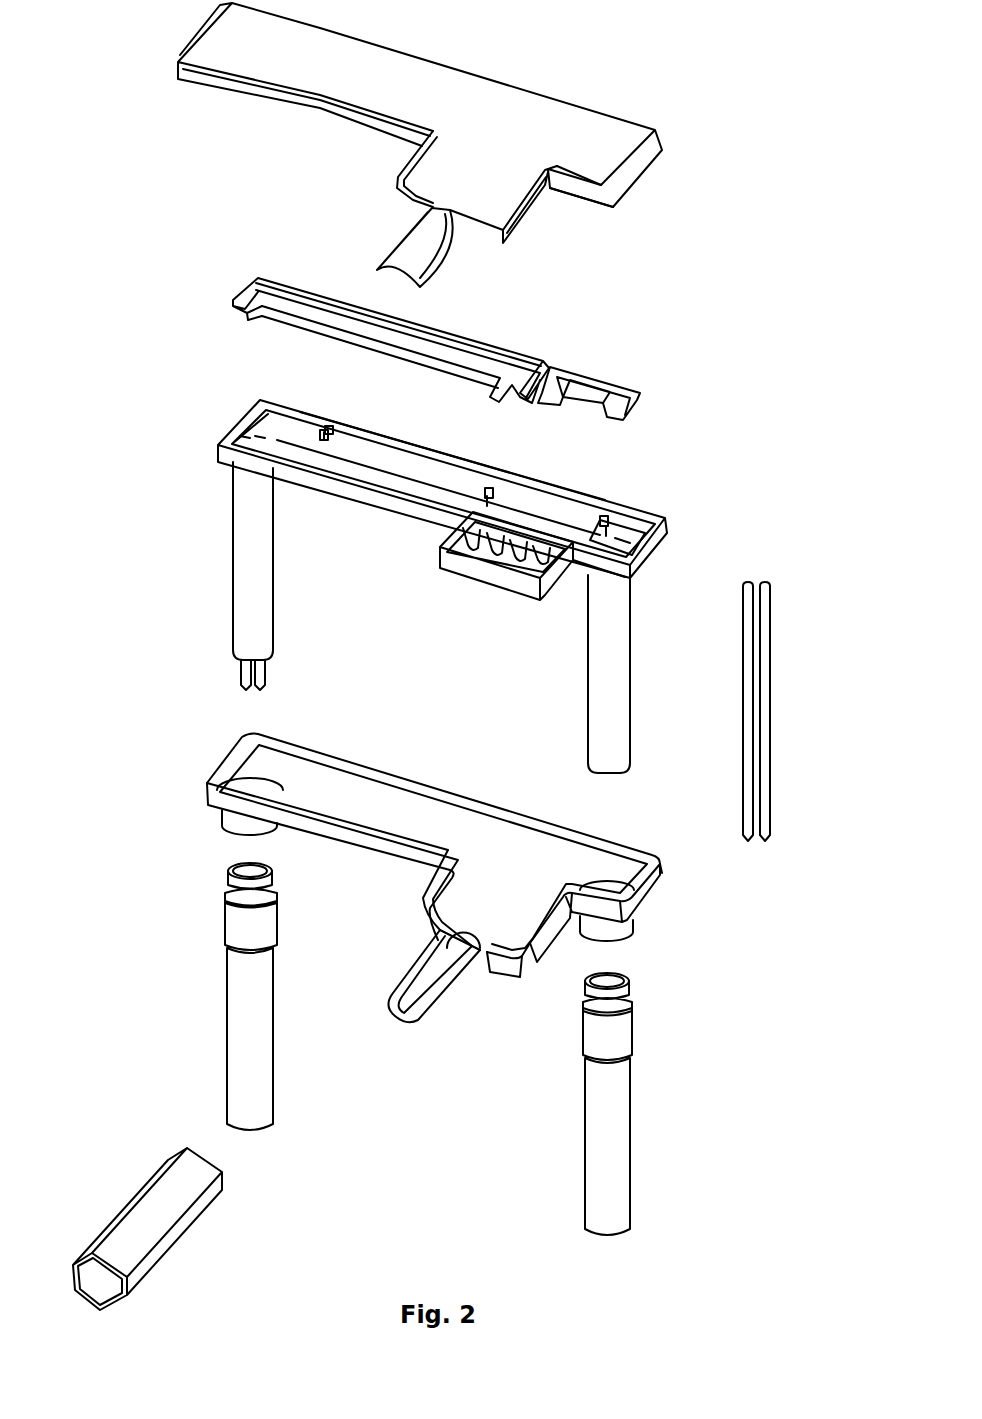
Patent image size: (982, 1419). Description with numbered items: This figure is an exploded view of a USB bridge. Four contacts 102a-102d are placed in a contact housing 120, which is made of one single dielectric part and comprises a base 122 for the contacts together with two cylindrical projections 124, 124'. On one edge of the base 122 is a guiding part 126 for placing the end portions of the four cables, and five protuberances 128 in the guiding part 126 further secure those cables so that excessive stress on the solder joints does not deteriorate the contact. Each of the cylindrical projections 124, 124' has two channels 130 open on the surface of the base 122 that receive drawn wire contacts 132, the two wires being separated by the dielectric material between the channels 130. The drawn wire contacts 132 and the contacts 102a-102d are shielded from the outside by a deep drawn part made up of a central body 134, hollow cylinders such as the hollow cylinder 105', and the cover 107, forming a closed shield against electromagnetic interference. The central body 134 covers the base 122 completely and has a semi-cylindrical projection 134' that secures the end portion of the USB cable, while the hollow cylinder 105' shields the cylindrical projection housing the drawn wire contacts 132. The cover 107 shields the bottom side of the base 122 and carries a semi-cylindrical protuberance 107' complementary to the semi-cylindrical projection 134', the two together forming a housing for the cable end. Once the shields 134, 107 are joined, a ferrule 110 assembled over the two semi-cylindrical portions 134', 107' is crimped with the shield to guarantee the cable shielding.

The cover 107 is at (420, 123).
The semi-cylindrical protuberance 107' is at (398, 247).
The contacts 102a-102d is at (507, 355).
The contact housing 120 is at (182, 474).
The base 122 is at (393, 503).
The cylindrical projection 124 is at (220, 576).
The cylindrical projection 124' is at (575, 674).
The guiding part 126 is at (483, 577).
The protuberances 128 is at (495, 525).
The channels 130 is at (622, 525).
The drawn wire contacts 132 is at (772, 708).
The central body 134 is at (472, 854).
The semi-cylindrical projection 134' is at (471, 976).
The hollow cylinder 105' is at (432, 1049).
The ferrule 110 is at (167, 1252).